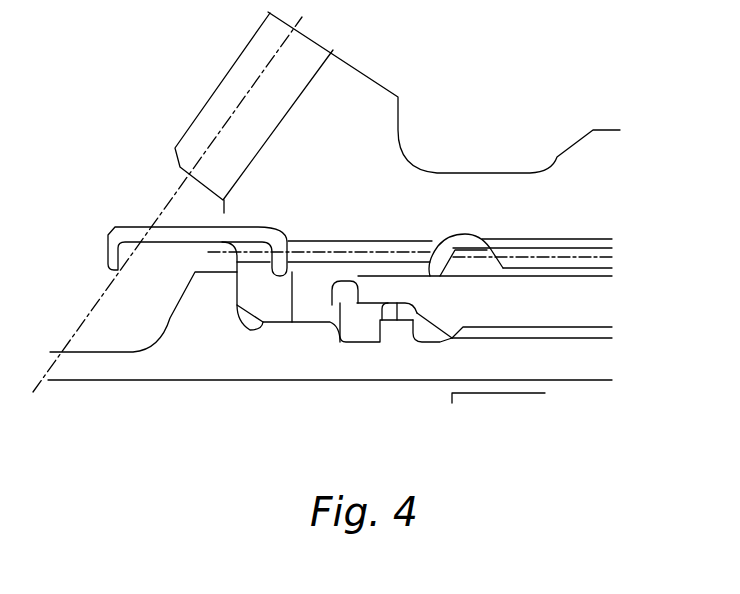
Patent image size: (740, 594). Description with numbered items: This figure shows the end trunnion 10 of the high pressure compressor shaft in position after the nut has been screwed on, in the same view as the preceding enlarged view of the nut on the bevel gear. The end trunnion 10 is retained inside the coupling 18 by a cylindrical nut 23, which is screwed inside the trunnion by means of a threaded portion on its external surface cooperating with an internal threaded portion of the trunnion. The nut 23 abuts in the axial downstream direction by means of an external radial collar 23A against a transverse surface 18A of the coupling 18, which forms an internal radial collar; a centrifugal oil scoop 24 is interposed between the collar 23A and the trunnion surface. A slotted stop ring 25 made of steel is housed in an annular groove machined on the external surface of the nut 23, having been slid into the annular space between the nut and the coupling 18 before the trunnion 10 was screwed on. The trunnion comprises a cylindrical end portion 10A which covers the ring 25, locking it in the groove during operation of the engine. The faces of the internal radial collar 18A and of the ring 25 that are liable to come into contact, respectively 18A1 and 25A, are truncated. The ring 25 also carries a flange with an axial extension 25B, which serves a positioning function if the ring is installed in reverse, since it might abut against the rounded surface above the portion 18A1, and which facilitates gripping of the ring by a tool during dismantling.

The end trunnion 10 is at (588, 302).
The cylindrical end portion 10A is at (370, 292).
The coupling 18 is at (506, 213).
The transverse surface 18A is at (308, 298).
The truncated face of the internal radial collar 18A1 is at (331, 306).
The cylindrical nut 23 is at (100, 367).
The external radial collar 23A is at (202, 310).
The centrifugal oil scoop 24 is at (128, 233).
The slotted stop ring 25 is at (353, 325).
The truncated face of the ring 25A is at (345, 293).
The axial extension 25B is at (385, 310).